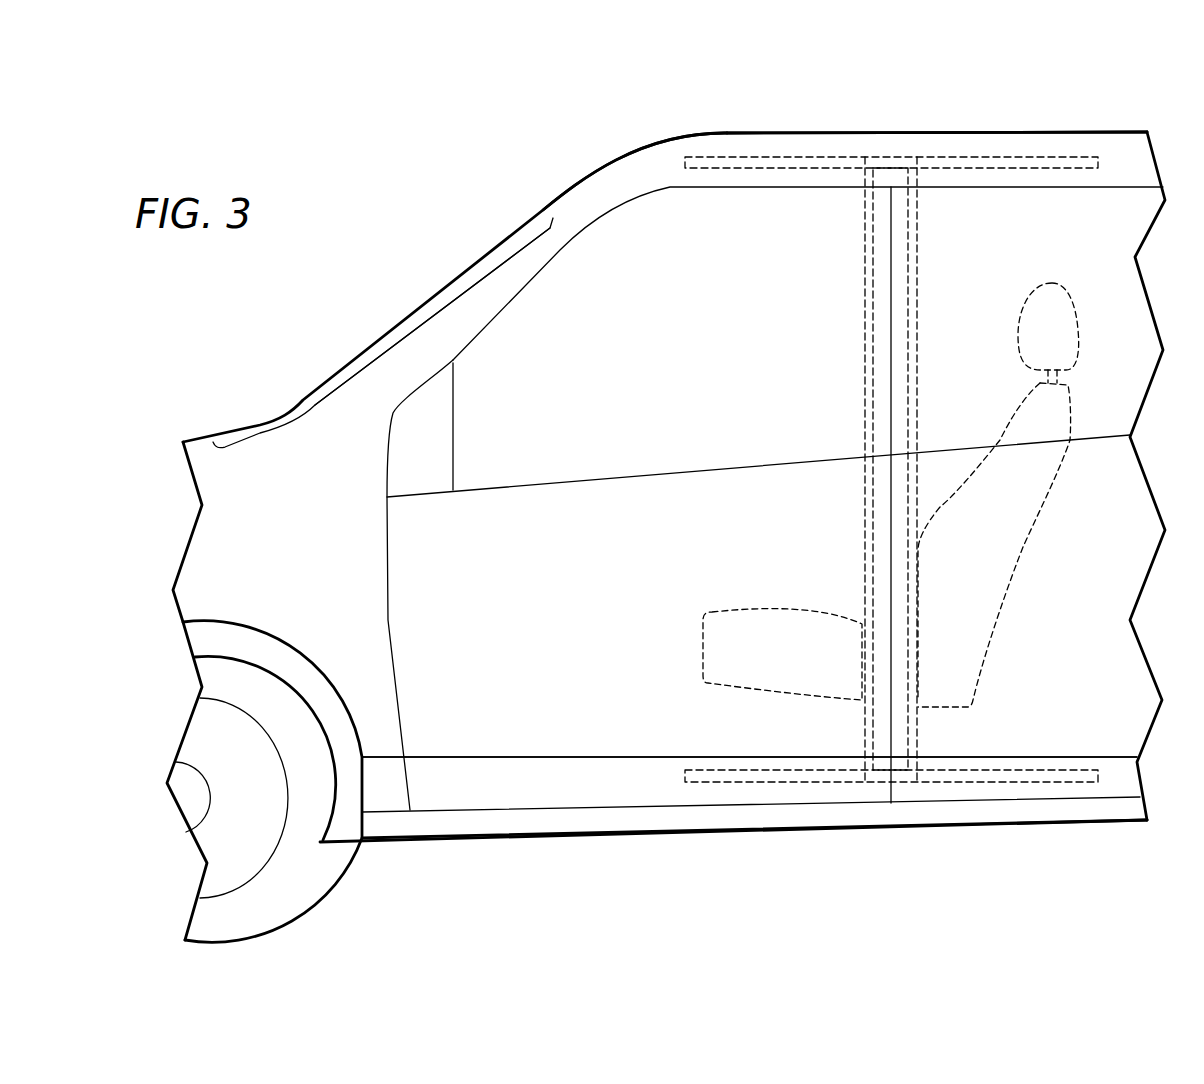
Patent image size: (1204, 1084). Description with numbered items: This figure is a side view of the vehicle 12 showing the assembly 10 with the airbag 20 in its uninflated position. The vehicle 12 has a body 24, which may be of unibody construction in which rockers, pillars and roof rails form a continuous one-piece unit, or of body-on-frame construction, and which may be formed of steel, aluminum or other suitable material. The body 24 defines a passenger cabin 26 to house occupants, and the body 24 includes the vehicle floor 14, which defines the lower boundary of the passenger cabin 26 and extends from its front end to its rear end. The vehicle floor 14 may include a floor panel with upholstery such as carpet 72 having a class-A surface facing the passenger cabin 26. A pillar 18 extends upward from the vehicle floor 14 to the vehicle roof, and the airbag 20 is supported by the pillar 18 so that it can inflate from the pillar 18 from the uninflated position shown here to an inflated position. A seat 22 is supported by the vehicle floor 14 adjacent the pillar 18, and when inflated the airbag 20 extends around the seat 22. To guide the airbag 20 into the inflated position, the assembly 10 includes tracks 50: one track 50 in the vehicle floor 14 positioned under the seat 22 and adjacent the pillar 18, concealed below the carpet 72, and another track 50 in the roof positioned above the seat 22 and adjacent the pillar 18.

The assembly 10 is at (776, 220).
The vehicle 12 is at (1130, 82).
The vehicle floor 14 is at (827, 132).
The pillar 18 is at (855, 540).
The airbag 20 is at (872, 360).
The seat 22 is at (999, 634).
The body 24 is at (563, 182).
The passenger cabin 26 is at (603, 337).
The track 50 is at (978, 157).
The carpet 72 is at (647, 757).